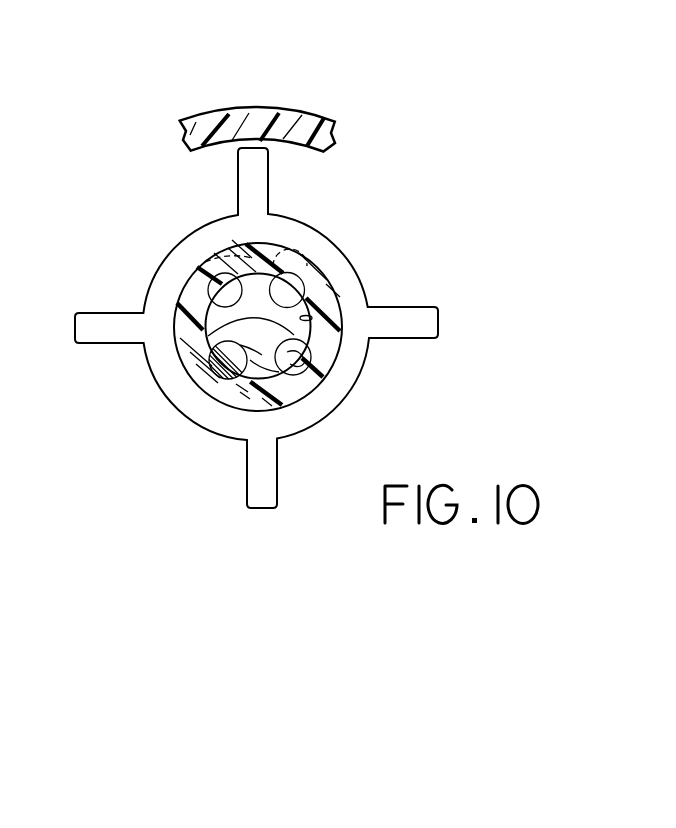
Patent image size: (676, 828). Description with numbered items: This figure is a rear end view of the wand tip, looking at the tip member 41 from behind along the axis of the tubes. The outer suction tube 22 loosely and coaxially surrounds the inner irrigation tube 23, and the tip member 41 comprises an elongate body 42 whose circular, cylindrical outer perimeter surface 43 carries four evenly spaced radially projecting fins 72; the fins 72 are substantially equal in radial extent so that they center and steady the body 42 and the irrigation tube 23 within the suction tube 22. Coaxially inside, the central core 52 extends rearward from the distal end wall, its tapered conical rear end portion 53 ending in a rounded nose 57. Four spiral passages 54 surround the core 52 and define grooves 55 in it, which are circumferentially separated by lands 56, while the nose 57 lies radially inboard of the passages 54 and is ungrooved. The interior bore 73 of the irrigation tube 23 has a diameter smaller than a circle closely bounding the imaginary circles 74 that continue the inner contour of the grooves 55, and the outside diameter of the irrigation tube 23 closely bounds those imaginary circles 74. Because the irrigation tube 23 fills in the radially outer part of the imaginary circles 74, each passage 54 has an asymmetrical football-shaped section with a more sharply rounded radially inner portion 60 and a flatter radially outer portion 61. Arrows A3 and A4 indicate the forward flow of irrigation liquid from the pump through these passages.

The outer suction tube 22 is at (312, 122).
The fins 72 is at (260, 155).
The tip member 41 is at (248, 321).
The body 42 is at (192, 226).
The outer perimeter surface 43 is at (207, 220).
The imaginary circles 74 is at (262, 256).
The interior bore 73 is at (312, 318).
The inner irrigation tube 23 is at (337, 320).
The grooves 55 is at (180, 298).
The lands 56 is at (207, 328).
The rounded nose 57 is at (224, 342).
The conical rear end portion 53 is at (236, 356).
The passages 54 is at (241, 368).
The radially inner portion 60 is at (244, 380).
The radially outer portion 61 is at (248, 386).
The core 52 is at (242, 407).
The arrow A3 is at (297, 388).
The arrow A4 is at (300, 382).